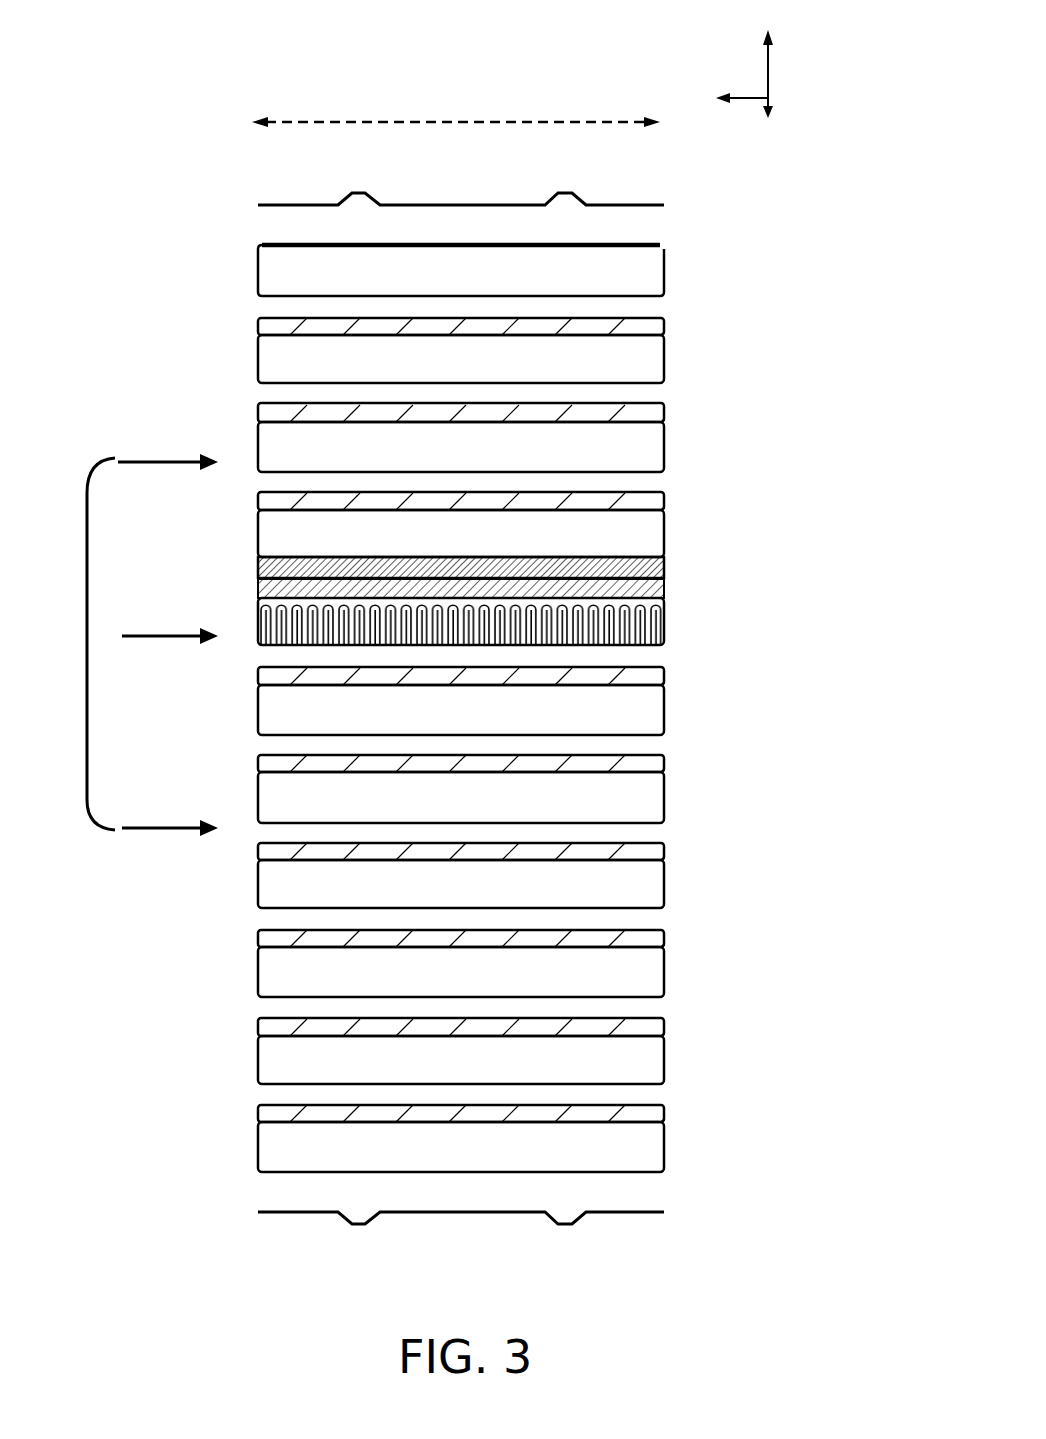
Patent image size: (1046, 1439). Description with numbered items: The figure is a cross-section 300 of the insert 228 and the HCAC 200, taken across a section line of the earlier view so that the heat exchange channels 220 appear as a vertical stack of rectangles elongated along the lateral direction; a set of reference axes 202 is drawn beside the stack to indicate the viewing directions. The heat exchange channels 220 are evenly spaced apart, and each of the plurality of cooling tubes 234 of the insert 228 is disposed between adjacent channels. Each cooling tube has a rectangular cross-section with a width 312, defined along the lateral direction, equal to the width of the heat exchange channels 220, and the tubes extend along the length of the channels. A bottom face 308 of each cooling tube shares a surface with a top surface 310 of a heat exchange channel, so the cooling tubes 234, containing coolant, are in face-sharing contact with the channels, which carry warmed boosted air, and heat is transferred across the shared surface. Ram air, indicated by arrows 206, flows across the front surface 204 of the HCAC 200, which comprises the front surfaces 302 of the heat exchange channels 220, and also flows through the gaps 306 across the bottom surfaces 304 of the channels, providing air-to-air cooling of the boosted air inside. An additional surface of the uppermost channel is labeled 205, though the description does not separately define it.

The cross-section 300 is at (598, 30).
The coordinate axes 202 is at (795, 25).
The width 312 is at (352, 122).
The front surface 204 is at (246, 238).
The side edge 205 is at (678, 246).
The heat exchange channels 220 is at (268, 358).
The HCAC 200 is at (711, 300).
The plurality of cooling tubes 234 is at (662, 490).
The insert 228 is at (732, 625).
The arrows 206 is at (87, 645).
The bottom surfaces 304 is at (287, 736).
The gaps 306 is at (650, 745).
The bottom face 308 is at (650, 861).
The top surface 310 is at (640, 945).
The front surfaces 302 is at (258, 1048).